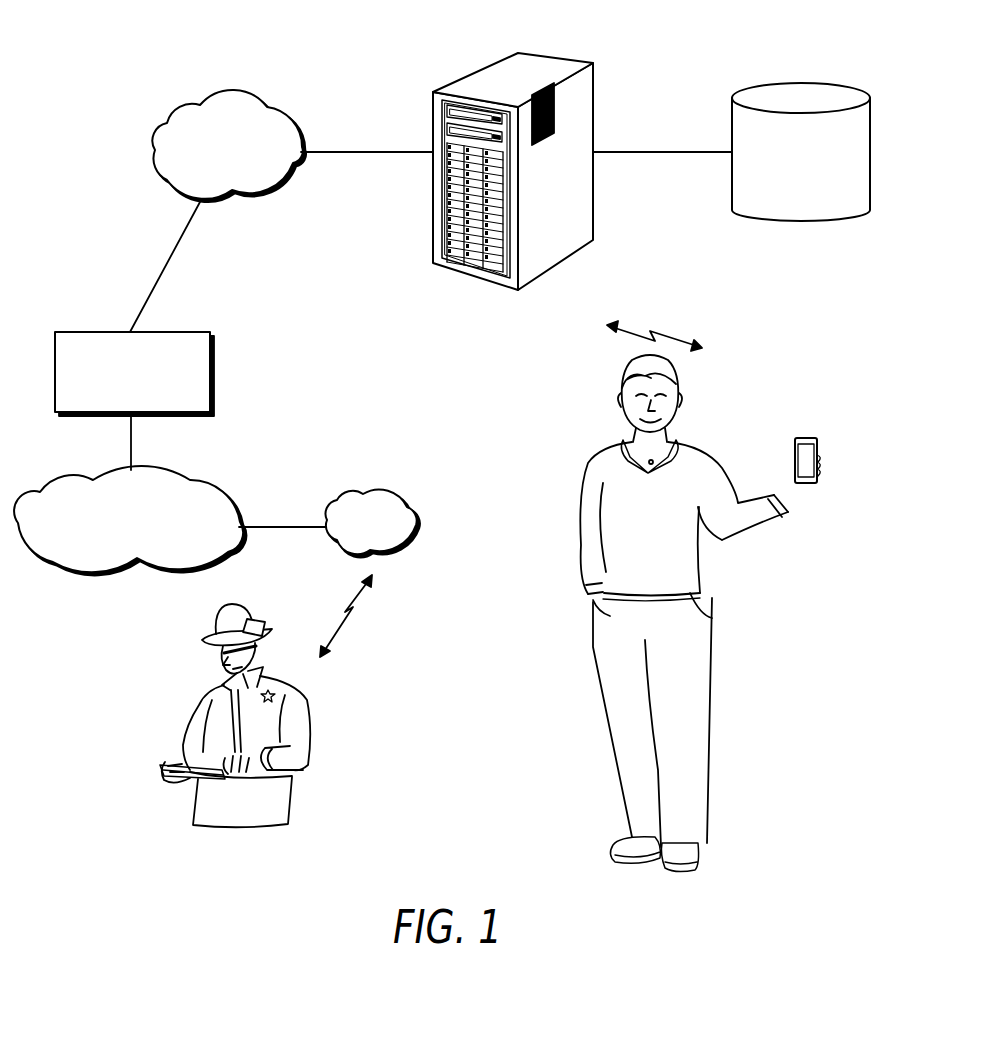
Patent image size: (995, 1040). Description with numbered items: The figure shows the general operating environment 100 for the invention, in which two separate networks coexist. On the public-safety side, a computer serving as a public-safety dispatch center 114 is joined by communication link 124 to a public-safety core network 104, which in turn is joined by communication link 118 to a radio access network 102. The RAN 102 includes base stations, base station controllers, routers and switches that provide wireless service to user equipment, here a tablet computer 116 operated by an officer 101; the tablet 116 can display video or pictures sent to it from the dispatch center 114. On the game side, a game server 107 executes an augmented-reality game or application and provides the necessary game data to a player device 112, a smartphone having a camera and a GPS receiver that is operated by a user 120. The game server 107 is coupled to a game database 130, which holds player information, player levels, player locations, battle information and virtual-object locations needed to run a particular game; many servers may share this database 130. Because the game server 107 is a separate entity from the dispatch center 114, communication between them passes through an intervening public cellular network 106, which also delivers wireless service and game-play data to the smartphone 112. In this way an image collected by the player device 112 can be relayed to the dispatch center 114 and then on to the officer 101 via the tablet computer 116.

The general operating environment 100 is at (86, 36).
The officer 101 is at (310, 733).
The radio access network 102 is at (374, 488).
The public-safety core network 104 is at (160, 268).
The public network 106 is at (236, 90).
The game server 107 is at (556, 58).
The player device 112 is at (817, 442).
The dispatch center 114 is at (191, 332).
The tablet computer 116 is at (188, 785).
The communication link 118 is at (282, 528).
The user 120 is at (590, 462).
The communication link 124 is at (130, 446).
The game database 130 is at (802, 82).